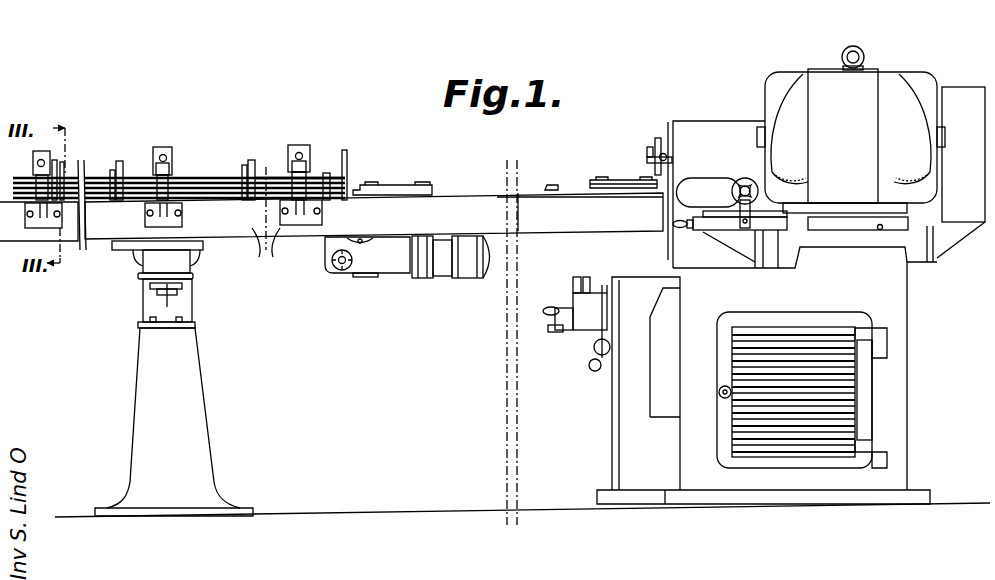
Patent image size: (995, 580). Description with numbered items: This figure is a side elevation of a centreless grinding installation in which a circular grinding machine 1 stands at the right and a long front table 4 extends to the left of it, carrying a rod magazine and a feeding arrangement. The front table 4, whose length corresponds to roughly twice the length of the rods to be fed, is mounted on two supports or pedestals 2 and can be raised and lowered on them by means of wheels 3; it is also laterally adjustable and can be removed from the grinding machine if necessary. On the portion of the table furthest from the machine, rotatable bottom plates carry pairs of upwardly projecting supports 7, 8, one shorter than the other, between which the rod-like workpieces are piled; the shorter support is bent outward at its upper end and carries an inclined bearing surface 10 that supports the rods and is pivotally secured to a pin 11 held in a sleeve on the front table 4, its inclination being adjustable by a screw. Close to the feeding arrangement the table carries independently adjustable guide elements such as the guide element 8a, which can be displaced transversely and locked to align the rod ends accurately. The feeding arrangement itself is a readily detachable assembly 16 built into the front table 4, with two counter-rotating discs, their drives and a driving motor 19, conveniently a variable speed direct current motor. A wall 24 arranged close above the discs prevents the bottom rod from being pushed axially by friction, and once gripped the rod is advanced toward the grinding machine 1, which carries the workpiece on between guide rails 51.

The circular grinding machine 1 is at (895, 301).
The pedestal 2 is at (207, 443).
The wheel 3 is at (196, 256).
The front table 4 is at (266, 226).
The support 7 is at (110, 170).
The support 8 is at (121, 162).
The guide element 8a is at (326, 174).
The inclined bearing surface 10 is at (172, 150).
The pin 11 is at (290, 177).
The detachable assembly 16 is at (401, 268).
The driving motor 19 is at (468, 278).
The wall 24 is at (348, 156).
The guide rails 51 is at (403, 186).